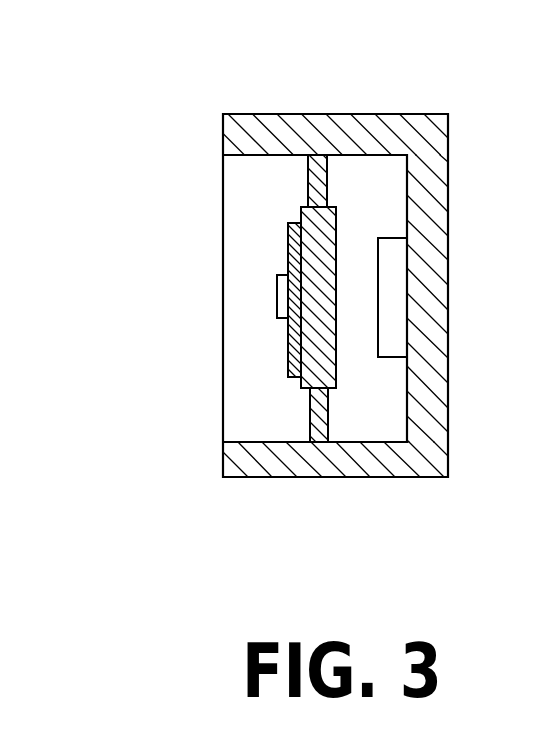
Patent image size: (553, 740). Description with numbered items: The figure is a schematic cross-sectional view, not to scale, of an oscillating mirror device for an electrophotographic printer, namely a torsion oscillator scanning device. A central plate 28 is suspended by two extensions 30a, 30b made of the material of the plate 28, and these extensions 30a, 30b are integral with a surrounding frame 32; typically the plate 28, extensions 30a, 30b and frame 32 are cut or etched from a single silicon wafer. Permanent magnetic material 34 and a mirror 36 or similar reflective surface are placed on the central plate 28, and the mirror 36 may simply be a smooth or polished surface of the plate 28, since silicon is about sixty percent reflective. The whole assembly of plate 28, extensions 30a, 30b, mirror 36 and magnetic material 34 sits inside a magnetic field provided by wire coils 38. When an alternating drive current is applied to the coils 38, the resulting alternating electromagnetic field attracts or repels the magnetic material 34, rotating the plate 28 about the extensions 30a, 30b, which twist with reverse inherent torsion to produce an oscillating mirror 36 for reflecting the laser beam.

The frame 32 is at (247, 115).
The extension 30a is at (307, 173).
The extension 30b is at (310, 412).
The central plate 28 is at (300, 217).
The permanent magnetic material 34 is at (277, 296).
The mirror 36 is at (288, 358).
The wire coils 38 is at (393, 305).